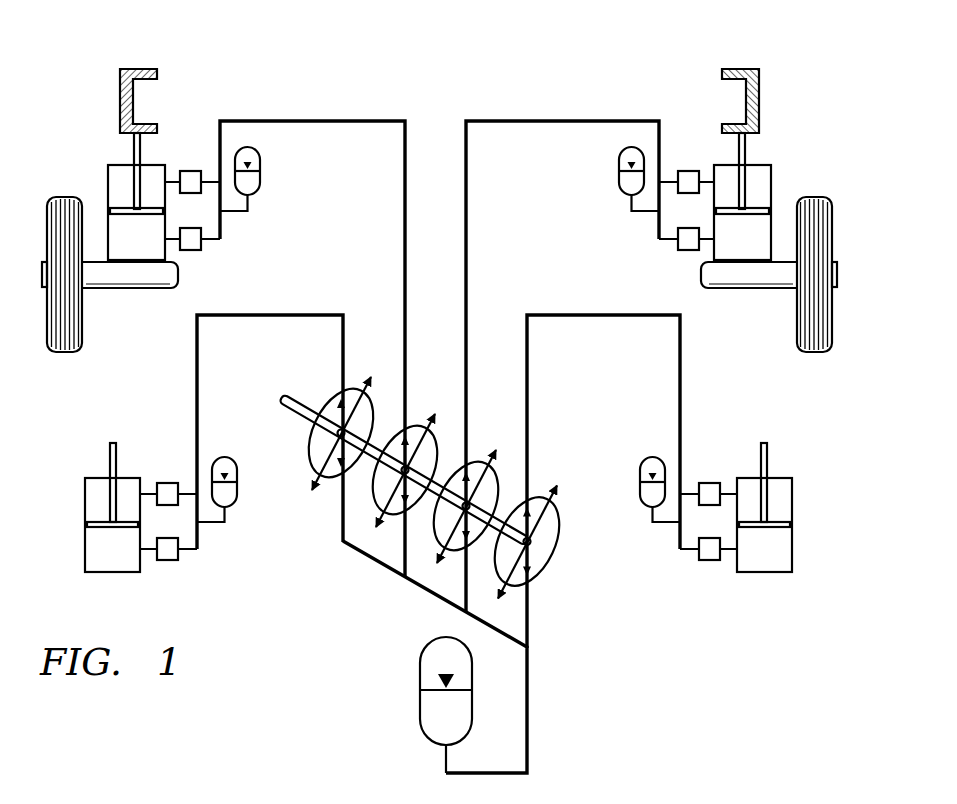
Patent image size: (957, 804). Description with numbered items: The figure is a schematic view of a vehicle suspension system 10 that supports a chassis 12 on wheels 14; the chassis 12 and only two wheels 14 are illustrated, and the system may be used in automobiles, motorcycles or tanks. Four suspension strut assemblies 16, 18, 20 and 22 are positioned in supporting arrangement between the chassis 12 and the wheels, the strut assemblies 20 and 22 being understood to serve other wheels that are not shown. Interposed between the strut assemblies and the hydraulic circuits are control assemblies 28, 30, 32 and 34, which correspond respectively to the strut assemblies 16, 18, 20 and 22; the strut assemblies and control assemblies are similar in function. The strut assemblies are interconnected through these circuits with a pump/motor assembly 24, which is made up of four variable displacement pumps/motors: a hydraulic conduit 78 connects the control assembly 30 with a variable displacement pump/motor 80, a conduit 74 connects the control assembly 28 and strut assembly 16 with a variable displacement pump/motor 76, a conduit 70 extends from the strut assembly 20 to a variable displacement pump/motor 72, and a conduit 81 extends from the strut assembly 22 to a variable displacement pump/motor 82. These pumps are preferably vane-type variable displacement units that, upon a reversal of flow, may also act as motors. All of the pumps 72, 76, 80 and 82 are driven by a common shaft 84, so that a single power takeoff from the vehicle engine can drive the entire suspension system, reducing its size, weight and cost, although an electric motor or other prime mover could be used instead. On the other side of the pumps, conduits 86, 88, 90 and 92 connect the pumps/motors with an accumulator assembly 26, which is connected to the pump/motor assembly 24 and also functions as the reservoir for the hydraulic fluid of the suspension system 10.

The vehicle suspension system 10 is at (473, 72).
The chassis 12 is at (119, 78).
The wheels 14 is at (50, 347).
The suspension strut assembly 16 is at (777, 183).
The suspension strut assembly 18 is at (100, 183).
The suspension strut assembly 20 is at (72, 555).
The suspension strut assembly 22 is at (802, 558).
The pump/motor assembly 24 is at (315, 548).
The accumulator assembly 26 is at (407, 700).
The control assembly 28 is at (602, 184).
The control assembly 30 is at (270, 190).
The control assembly 32 is at (190, 570).
The control assembly 34 is at (695, 573).
The conduit 70 is at (197, 380).
The variable displacement pump/motor 72 is at (355, 388).
The conduit 74 is at (604, 121).
The variable displacement pump/motor 76 is at (478, 460).
The hydraulic conduit 78 is at (275, 121).
The variable displacement pump/motor 80 is at (413, 425).
The conduit 81 is at (680, 380).
The variable displacement pump/motor 82 is at (540, 495).
The common shaft 84 is at (295, 412).
The conduit 86 is at (338, 498).
The conduit 88 is at (404, 548).
The conduit 90 is at (463, 580).
The conduit 92 is at (527, 612).